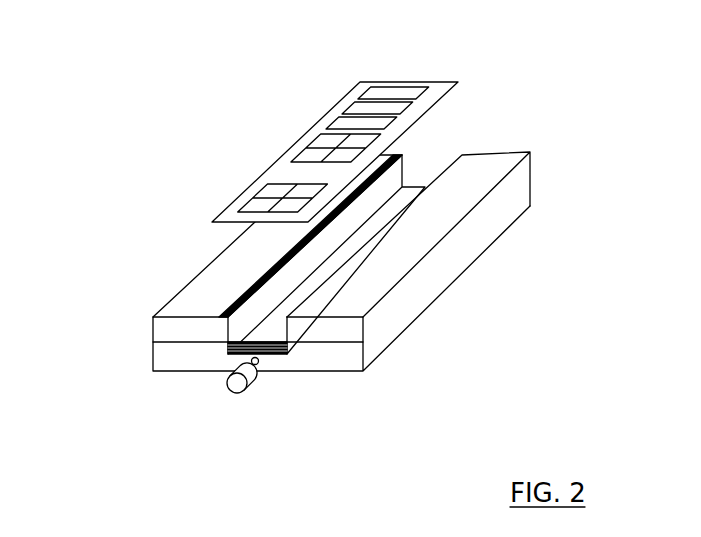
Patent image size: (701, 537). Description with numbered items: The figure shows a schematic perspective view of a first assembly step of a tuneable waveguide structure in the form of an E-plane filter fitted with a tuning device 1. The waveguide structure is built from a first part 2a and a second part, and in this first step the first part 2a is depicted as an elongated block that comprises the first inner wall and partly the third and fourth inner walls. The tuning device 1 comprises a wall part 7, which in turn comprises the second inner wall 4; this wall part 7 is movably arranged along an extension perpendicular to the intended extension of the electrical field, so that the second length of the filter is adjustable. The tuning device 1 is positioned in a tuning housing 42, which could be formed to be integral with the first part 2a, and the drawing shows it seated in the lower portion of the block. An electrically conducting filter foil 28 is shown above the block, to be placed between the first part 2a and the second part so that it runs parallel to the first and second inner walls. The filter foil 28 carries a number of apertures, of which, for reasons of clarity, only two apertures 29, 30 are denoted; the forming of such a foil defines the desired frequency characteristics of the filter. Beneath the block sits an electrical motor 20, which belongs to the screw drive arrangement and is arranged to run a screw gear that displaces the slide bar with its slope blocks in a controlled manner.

The tuning device 1 is at (282, 355).
The first part 2a is at (388, 302).
The second inner wall 4 is at (300, 280).
The wall part 7 is at (227, 343).
The electrical motor 20 is at (233, 385).
The filter foil 28 is at (292, 148).
The aperture 29 is at (380, 92).
The aperture 30 is at (367, 108).
The tuning housing 42 is at (322, 360).